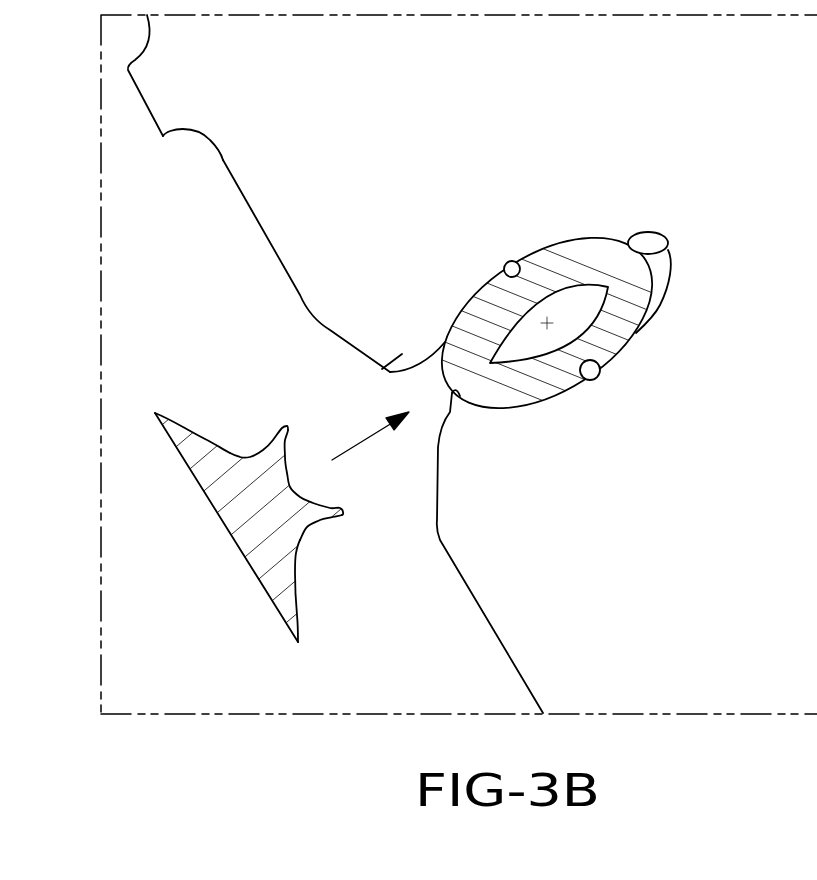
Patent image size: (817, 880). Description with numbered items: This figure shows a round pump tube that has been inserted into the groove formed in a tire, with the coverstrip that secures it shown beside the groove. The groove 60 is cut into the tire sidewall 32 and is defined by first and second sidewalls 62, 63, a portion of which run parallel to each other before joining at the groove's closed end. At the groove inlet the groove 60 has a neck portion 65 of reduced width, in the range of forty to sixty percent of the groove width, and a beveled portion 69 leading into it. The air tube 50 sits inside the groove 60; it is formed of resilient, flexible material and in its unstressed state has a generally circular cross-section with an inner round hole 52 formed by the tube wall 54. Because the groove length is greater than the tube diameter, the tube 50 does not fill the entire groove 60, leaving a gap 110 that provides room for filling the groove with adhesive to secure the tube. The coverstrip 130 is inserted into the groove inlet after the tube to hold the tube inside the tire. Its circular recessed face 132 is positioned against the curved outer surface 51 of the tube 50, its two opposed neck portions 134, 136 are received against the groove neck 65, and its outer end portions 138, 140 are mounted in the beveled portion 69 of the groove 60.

The tire sidewall 32 is at (258, 140).
The beveled portion 69 is at (327, 327).
The neck portion 65 is at (388, 371).
The curved outer surface 51 is at (455, 397).
The air tube 50 is at (585, 309).
The inner round hole 52 is at (528, 340).
The tube wall 54 is at (622, 322).
The groove 60 is at (630, 234).
The first sidewall 62 is at (506, 272).
The second sidewall 63 is at (600, 376).
The gap 110 is at (657, 265).
The coverstrip 130 is at (305, 491).
The circular recessed face 132 is at (298, 496).
The neck portion 134 is at (250, 455).
The neck portion 136 is at (305, 539).
The outer end portion 138 is at (174, 420).
The outer end portion 140 is at (297, 613).